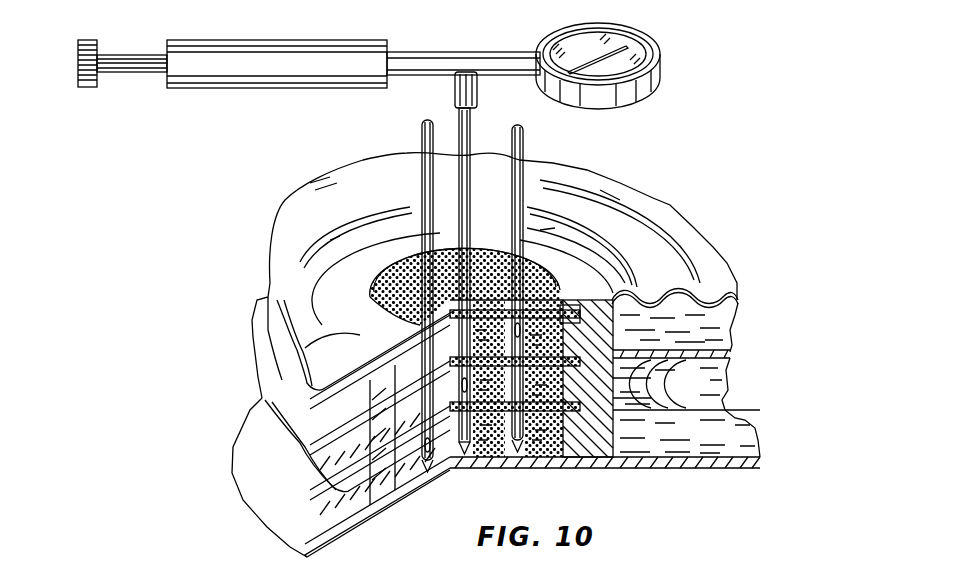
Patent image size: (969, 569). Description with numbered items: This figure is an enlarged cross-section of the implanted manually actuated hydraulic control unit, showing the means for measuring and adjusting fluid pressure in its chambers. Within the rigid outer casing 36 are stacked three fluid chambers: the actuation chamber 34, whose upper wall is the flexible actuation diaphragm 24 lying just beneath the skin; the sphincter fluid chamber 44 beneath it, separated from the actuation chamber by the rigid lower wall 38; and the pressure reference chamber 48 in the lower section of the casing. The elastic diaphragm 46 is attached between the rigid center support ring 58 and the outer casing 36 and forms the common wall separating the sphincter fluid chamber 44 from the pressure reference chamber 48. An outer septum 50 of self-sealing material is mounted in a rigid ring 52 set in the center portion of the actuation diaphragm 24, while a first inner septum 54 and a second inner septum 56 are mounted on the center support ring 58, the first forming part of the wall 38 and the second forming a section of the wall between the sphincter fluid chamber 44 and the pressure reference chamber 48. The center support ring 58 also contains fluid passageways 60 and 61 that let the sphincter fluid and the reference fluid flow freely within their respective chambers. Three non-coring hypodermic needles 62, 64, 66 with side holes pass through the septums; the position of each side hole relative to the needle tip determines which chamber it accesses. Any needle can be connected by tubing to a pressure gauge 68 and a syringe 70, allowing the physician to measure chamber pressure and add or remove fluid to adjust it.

The flexible actuation diaphragm 24 is at (718, 291).
The actuation chamber 34 is at (745, 320).
The outer casing 36 is at (343, 533).
The actuation chamber lower wall 38 is at (270, 384).
The sphincter fluid chamber 44 is at (733, 376).
The elastic diaphragm 46 is at (299, 456).
The pressure reference chamber 48 is at (762, 428).
The outer septum 50 is at (406, 272).
The rigid ring 52 is at (582, 271).
The first inner septum 54 is at (578, 352).
The second inner septum 56 is at (487, 412).
The rigid center support ring 58 is at (606, 432).
The fluid passageway 60 is at (618, 384).
The fluid passageway 61 is at (606, 446).
The hypodermic needle 62 is at (421, 140).
The hypodermic needle 64 is at (472, 123).
The hypodermic needle 66 is at (525, 143).
The pressure gauge 68 is at (613, 29).
The syringe 70 is at (340, 41).